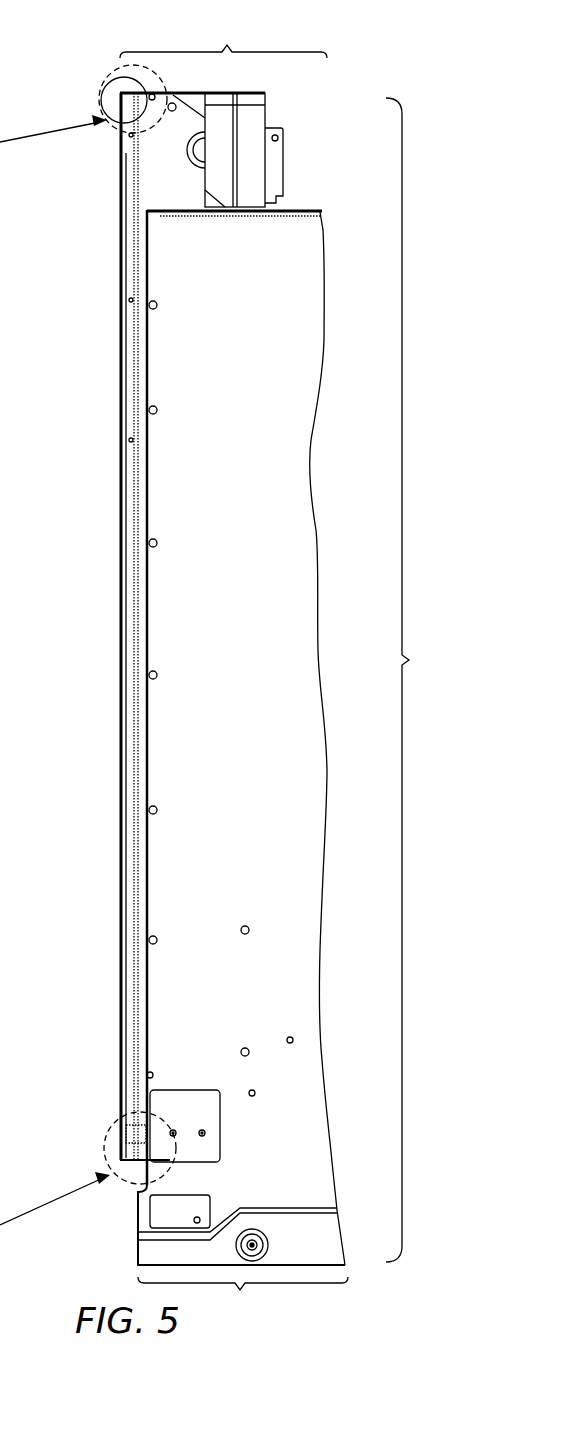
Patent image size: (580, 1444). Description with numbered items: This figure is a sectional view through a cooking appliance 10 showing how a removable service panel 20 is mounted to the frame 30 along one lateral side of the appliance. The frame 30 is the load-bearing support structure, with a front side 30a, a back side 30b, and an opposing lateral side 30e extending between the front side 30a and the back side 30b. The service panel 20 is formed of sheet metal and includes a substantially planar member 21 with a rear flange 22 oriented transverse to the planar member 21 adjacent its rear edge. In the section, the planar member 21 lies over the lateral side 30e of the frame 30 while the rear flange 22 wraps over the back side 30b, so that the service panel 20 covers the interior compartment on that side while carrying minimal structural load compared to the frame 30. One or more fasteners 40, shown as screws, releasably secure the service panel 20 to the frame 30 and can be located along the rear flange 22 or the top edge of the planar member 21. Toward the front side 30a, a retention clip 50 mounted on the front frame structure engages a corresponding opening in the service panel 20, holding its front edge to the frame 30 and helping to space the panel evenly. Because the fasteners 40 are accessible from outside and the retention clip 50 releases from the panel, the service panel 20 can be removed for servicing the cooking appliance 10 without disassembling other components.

The cooking appliance 10 is at (356, 80).
The service panel 20 is at (110, 257).
The planar member 21 is at (128, 513).
The rear flange 22 is at (102, 79).
The frame 30 is at (178, 212).
The front side 30a is at (243, 1302).
The back side 30b is at (223, 38).
The lateral side 30e is at (424, 680).
The fastener 40 is at (160, 92).
The retention clip 50 is at (125, 1116).